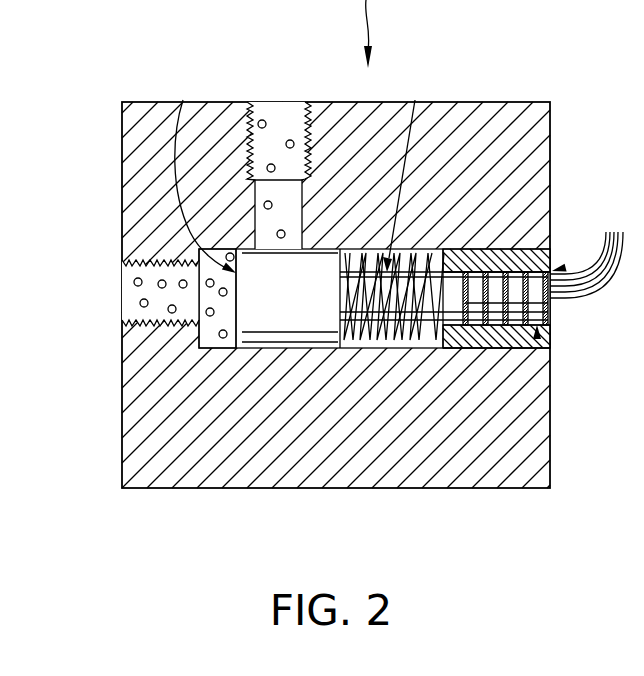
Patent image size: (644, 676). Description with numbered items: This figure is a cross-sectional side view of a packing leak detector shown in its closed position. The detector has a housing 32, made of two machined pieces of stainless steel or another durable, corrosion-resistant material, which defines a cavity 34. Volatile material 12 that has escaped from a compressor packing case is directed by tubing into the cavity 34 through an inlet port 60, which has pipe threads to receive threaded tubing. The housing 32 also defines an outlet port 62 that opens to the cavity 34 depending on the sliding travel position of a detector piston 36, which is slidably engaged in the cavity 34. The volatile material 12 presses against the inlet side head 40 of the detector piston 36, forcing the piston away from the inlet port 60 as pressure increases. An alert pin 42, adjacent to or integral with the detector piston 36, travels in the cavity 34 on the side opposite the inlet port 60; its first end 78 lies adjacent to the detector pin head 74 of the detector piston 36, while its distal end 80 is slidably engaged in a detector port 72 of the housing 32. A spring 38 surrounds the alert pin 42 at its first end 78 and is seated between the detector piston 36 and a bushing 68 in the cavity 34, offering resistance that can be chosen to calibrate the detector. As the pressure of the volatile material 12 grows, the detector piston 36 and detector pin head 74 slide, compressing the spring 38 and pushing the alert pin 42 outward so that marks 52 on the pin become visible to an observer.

The housing 32 is at (460, 101).
The volatile material 12 is at (134, 282).
The inlet port 60 is at (132, 320).
The outlet port 62 is at (277, 116).
The cavity 34 is at (208, 343).
The detector piston 36 is at (280, 315).
The inlet side head 40 is at (183, 100).
The detector pin head 74 is at (345, 303).
The spring 38 is at (416, 337).
The first end 78 is at (415, 100).
The alert pin 42 is at (456, 330).
The detector port 72 is at (558, 269).
The marks 52 is at (588, 249).
The distal end 80 is at (538, 338).
The bushing 68 is at (500, 340).